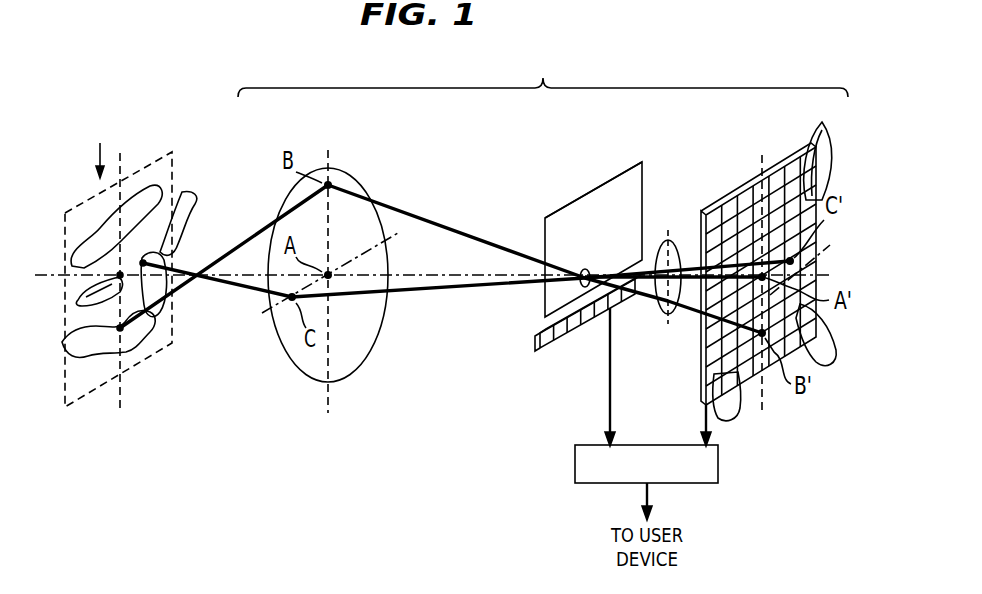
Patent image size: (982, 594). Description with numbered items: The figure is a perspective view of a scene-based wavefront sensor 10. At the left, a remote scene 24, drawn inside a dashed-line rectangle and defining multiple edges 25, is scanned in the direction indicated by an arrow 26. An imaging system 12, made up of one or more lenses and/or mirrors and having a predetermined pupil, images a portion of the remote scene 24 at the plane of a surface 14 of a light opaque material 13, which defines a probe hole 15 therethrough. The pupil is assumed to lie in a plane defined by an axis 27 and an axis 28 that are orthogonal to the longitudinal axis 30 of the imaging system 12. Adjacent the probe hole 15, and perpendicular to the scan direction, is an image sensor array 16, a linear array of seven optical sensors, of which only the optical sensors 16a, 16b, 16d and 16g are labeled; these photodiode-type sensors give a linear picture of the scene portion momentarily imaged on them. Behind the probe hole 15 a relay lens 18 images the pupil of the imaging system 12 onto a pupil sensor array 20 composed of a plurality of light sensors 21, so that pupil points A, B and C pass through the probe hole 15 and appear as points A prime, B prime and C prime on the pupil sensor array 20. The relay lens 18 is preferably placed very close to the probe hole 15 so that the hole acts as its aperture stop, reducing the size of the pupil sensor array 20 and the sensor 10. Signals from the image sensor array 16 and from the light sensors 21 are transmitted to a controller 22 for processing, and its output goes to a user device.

The scene-based wavefront sensor 10 is at (557, 70).
The imaging system 12 is at (348, 170).
The light opaque material 13 is at (636, 166).
The surface 14 is at (601, 192).
The probe hole 15 is at (582, 268).
The image sensor array 16 is at (573, 346).
The optical sensor 16a is at (549, 350).
The optical sensor 16b is at (574, 344).
The optical sensor 16d is at (608, 320).
The optical sensor 16g is at (640, 300).
The relay lens 18 is at (670, 238).
The pupil sensor array 20 is at (768, 172).
The light sensors 21 is at (745, 426).
The controller 22 is at (719, 461).
The remote scene 24 is at (150, 158).
The edges 25 is at (180, 194).
The arrow 26 is at (96, 158).
The axis 27 is at (268, 316).
The axis 28 is at (332, 397).
The longitudinal axis 30 is at (418, 273).